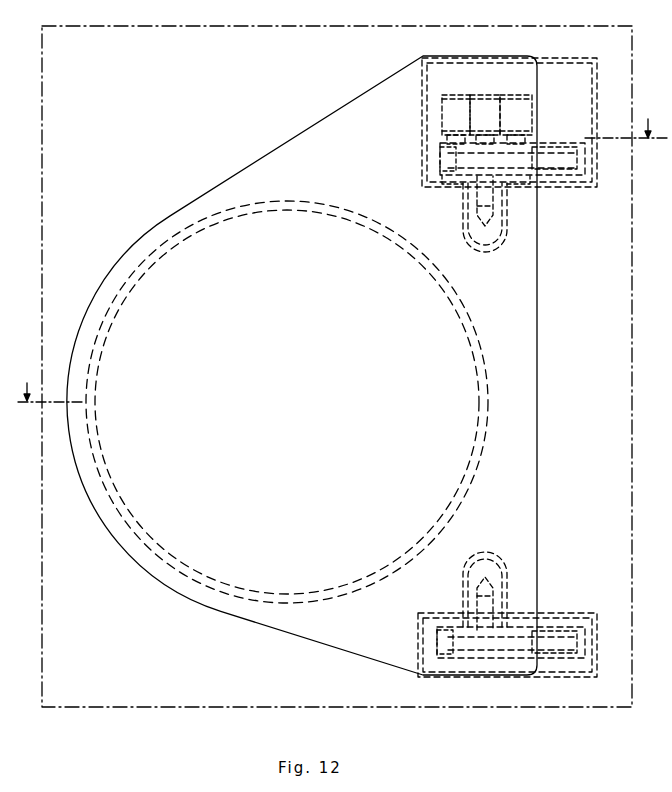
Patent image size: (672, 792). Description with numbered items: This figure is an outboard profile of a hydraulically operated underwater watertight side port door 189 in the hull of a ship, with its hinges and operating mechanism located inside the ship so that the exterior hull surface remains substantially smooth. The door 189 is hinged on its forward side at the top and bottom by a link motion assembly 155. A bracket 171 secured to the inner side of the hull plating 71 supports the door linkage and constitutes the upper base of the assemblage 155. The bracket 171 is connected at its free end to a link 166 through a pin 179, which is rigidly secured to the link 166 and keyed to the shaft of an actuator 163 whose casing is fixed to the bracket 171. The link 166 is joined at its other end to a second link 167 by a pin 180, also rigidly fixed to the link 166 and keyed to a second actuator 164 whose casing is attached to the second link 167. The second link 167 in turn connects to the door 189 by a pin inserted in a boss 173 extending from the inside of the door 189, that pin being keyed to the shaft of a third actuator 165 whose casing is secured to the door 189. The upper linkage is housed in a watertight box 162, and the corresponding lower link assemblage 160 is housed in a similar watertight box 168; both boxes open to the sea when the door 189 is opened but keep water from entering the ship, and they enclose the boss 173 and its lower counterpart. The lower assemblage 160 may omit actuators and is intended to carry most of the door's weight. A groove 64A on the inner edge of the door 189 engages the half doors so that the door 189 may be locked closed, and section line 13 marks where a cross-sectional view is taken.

The section line 13 is at (338, 260).
The plating 71 is at (583, 413).
The lower link assemblage 160 is at (522, 679).
The door 189 is at (318, 411).
The groove 64A is at (197, 575).
The link motion assembly 155 is at (576, 54).
The watertight box 162 is at (597, 117).
The actuator 163 is at (515, 93).
The second actuator 164 is at (457, 95).
The actuator 165 is at (480, 92).
The link 166 is at (535, 163).
The second link 167 is at (440, 170).
The watertight box 168 is at (593, 610).
The bracket 171 is at (583, 152).
The boss 173 is at (500, 231).
The pin 179 is at (510, 186).
The pin 180 is at (458, 185).